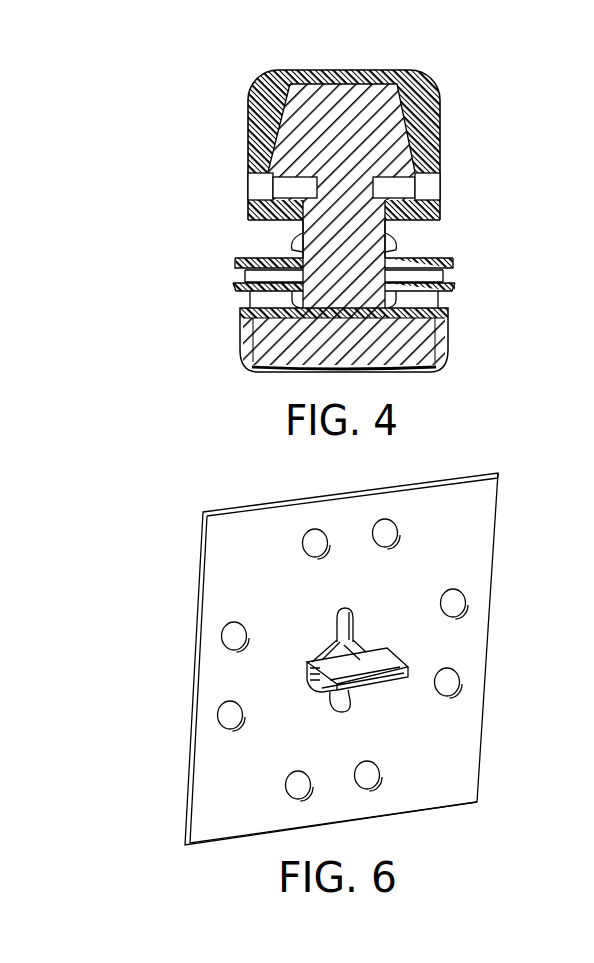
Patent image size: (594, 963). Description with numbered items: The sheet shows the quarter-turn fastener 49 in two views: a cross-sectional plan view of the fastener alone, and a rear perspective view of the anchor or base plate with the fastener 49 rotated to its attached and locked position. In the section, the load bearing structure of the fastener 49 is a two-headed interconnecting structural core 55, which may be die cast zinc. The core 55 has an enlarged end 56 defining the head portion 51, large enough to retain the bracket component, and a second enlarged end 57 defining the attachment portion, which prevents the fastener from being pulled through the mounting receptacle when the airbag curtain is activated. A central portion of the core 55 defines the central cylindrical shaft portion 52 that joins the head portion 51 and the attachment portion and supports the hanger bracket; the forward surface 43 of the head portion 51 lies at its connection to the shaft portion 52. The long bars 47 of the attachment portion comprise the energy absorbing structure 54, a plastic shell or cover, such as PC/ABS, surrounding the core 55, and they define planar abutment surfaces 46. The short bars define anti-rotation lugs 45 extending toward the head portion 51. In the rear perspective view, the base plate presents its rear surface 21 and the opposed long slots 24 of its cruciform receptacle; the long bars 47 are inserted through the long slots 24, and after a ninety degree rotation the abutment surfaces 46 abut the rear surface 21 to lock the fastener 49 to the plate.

In FIG. 6, the rear surface 21 is at (230, 553).
In FIG. 6, the long slots 24 is at (343, 615).
In FIG. 4, the forward surface 43 is at (432, 233).
In FIG. 6, the anti-rotation lugs 45 is at (337, 640).
In FIG. 4, the planar abutment surfaces 46 is at (427, 256).
In FIG. 4, the long bars 47 is at (250, 325).
In FIG. 6, the long bars 47 is at (338, 693).
In FIG. 4, the fastener 49 is at (441, 80).
In FIG. 6, the head portion 51 is at (295, 675).
In FIG. 4, the central cylindrical shaft portion 52 is at (300, 234).
In FIG. 4, the energy absorbing structure 54 is at (233, 277).
In FIG. 4, the structural core 55 is at (418, 135).
In FIG. 4, the enlarged end 56 is at (355, 103).
In FIG. 4, the second enlarged end 57 is at (440, 362).